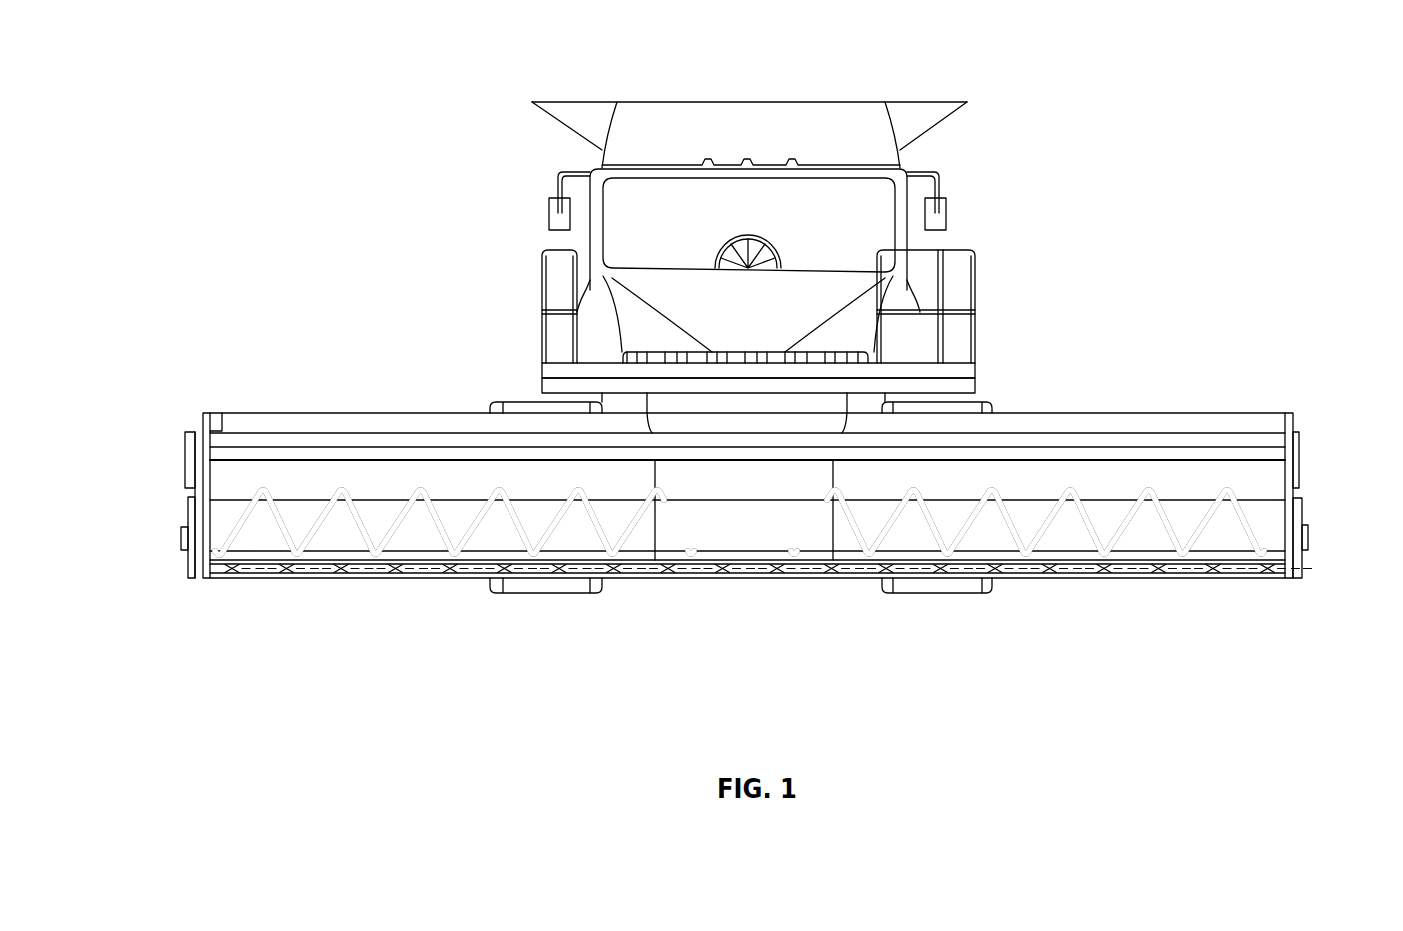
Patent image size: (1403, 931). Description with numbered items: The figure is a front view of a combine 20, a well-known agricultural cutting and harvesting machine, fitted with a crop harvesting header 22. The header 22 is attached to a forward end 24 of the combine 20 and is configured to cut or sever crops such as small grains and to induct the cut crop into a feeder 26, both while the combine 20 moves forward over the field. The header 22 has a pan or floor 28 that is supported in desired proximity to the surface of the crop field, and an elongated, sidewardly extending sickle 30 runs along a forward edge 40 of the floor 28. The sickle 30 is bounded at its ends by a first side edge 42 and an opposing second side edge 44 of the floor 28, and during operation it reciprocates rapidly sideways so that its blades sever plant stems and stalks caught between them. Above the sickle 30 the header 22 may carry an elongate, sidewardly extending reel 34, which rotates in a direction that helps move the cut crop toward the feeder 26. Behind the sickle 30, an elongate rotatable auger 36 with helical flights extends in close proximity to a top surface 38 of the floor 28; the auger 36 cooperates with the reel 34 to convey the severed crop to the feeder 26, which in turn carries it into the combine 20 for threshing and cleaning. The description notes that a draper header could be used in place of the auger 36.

The combine 20 is at (360, 105).
The header 22 is at (178, 454).
The forward end 24 is at (548, 387).
The feeder 26 is at (852, 402).
The floor 28 is at (352, 553).
The sickle 30 is at (1157, 575).
The reel 34 is at (1294, 422).
The auger 36 is at (1250, 498).
The top surface 38 is at (270, 553).
The forward edge 40 is at (417, 561).
The first side edge 42 is at (200, 553).
The second side edge 44 is at (1304, 553).